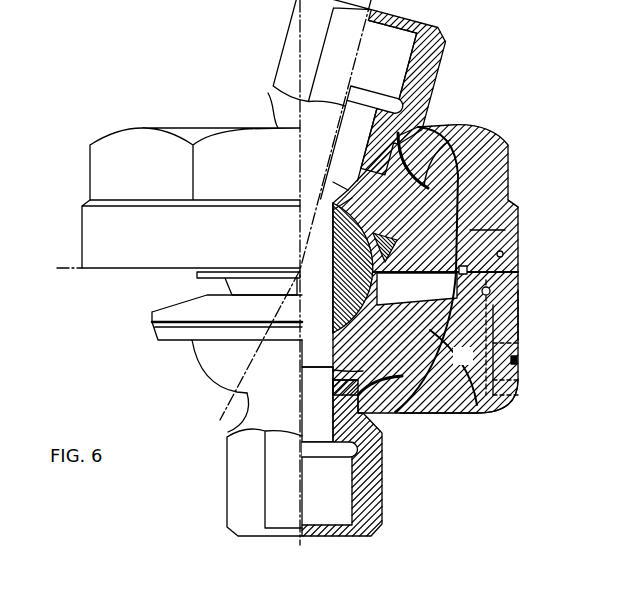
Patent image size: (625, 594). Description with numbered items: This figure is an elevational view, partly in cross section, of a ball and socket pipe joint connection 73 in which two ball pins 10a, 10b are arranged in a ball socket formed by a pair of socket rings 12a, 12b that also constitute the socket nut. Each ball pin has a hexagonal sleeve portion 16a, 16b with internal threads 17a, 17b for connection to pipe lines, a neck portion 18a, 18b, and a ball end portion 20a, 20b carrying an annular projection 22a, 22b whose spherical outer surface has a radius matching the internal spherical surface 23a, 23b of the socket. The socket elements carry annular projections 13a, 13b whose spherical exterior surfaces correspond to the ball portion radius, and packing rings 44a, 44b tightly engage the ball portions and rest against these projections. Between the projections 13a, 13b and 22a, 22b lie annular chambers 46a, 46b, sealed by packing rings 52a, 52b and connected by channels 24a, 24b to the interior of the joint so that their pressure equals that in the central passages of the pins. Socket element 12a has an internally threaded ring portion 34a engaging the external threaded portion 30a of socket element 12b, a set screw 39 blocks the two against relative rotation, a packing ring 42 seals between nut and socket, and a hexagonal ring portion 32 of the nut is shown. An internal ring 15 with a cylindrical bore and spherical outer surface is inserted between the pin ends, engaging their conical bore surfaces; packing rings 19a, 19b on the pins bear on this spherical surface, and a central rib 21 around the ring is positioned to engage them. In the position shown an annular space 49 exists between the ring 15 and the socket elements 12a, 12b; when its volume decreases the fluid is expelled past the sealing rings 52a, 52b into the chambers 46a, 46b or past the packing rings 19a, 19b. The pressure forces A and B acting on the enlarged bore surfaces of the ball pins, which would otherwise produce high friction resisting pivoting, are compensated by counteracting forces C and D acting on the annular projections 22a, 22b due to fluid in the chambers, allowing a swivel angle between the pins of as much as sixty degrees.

The ball pin 10a is at (345, 165).
The ball pin 10b is at (247, 398).
The socket ring 12a is at (473, 173).
The socket ring 12b is at (483, 411).
The annular projection 13a is at (418, 135).
The annular projection 13b is at (403, 404).
The internal ring 15 is at (333, 243).
The hexagonal sleeve portion 16a is at (285, 38).
The hexagonal sleeve portion 16b is at (238, 489).
The internal thread 17a is at (413, 44).
The internal thread 17b is at (353, 500).
The neck portion 18a is at (380, 113).
The neck portion 18b is at (333, 444).
The packing ring 19a is at (333, 256).
The packing ring 19b is at (210, 360).
The ball portion 20a is at (365, 180).
The ball portion 20b is at (363, 371).
The central rib 21 is at (337, 293).
The annular projection 22a is at (468, 271).
The annular projection 22b is at (514, 343).
The internal spherical surface 23a is at (487, 200).
The internal spherical surface 23b is at (480, 411).
The channel 24a is at (333, 214).
The channel 24b is at (333, 371).
The external threaded portion 30a is at (487, 413).
The hexagonal ring portion 32 is at (100, 172).
The internally threaded ring portion 34a is at (511, 324).
The set screw 39 is at (521, 381).
The packing ring 42 is at (482, 291).
The packing ring 44a is at (405, 157).
The packing ring 44b is at (427, 398).
The annular chamber 46a is at (424, 183).
The annular chamber 46b is at (453, 398).
The annular space 49 is at (494, 298).
The packing ring 52a is at (503, 254).
The packing ring 52b is at (521, 363).
The ball and socket pipe joint connection 73 is at (76, 240).
The pressure force A is at (326, 181).
The pressure force B is at (314, 359).
The counteracting force C is at (463, 355).
The counteracting force D is at (490, 228).